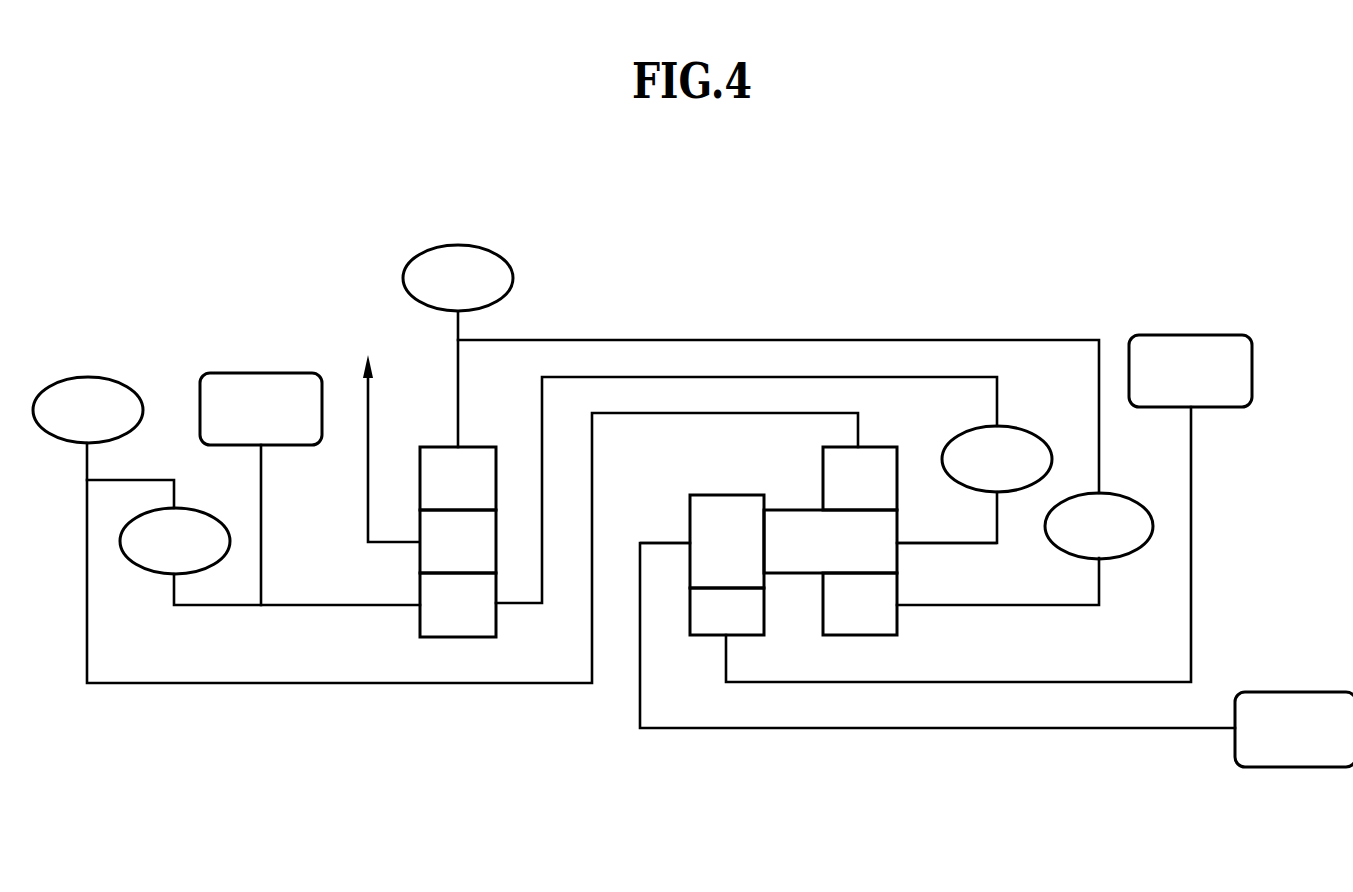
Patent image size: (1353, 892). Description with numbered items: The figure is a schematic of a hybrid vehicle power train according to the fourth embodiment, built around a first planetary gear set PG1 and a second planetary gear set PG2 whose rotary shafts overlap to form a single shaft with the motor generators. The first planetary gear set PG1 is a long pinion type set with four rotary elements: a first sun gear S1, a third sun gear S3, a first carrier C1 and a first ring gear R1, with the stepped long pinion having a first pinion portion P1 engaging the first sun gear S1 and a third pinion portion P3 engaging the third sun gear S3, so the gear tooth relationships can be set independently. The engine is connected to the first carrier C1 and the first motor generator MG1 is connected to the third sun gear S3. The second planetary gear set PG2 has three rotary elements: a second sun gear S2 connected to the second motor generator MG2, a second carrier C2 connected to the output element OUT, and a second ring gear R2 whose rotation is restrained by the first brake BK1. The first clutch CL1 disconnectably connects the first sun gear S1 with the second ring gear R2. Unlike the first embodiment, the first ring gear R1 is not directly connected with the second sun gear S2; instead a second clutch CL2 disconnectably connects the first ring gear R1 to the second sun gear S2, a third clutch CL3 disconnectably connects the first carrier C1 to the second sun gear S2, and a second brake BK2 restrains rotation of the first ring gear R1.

The first brake BK1 is at (458, 278).
The second brake BK2 is at (88, 410).
The first motor generator MG1 is at (1190, 371).
The second motor generator MG2 is at (261, 409).
The first clutch CL1 is at (1099, 526).
The second clutch CL2 is at (175, 541).
The third clutch CL3 is at (997, 459).
The first planetary gear set PG1 is at (793, 648).
The second planetary gear set PG2 is at (451, 610).
The first ring gear R1 is at (860, 478).
The second ring gear R2 is at (458, 478).
The first sun gear S1 is at (860, 604).
The second sun gear S2 is at (458, 605).
The third sun gear S3 is at (727, 611).
The first pinion portion P1 is at (830, 541).
The third pinion portion P3 is at (727, 541).
The first carrier C1 is at (818, 521).
The second carrier C2 is at (458, 541).
The output element OUT is at (379, 431).